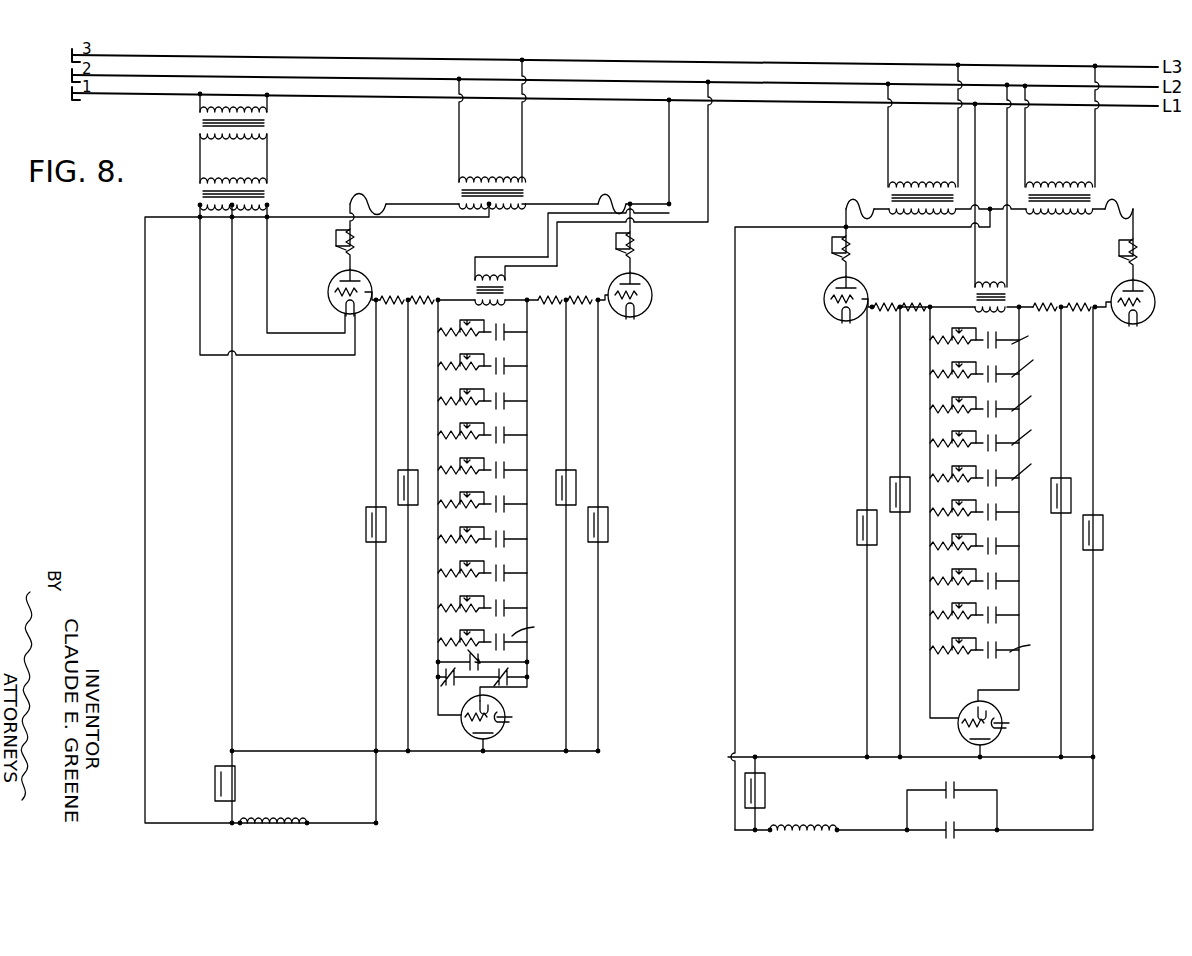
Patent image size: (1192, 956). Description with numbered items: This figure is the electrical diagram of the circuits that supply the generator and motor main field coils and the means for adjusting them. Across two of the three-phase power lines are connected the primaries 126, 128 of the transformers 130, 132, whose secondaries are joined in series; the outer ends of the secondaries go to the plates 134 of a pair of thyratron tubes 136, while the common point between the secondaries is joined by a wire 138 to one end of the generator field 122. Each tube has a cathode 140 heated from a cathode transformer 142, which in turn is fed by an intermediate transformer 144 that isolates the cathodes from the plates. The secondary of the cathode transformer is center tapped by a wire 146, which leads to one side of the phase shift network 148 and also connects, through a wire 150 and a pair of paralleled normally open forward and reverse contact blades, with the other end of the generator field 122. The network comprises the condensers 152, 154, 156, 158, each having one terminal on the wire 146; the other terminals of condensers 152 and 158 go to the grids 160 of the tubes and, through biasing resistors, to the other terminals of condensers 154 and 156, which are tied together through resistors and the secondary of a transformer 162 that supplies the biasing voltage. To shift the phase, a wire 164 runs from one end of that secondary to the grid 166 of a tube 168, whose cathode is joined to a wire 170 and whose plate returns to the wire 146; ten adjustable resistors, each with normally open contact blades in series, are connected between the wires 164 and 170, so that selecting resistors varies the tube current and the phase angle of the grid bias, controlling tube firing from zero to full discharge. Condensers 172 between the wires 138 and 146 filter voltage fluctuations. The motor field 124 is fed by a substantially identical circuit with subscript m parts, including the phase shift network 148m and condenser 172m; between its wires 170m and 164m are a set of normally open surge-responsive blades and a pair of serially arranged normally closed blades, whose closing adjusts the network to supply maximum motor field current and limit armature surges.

The generator field 122 is at (808, 830).
The motor field 124 is at (290, 822).
The primary of transformer 130 126 is at (932, 188).
The primary of transformer 132 128 is at (1070, 180).
The transformer 130 is at (884, 205).
The transformer 132 is at (1097, 208).
The plate 134 is at (836, 287).
The thyratron tube 136 is at (830, 300).
The wire 138 is at (736, 530).
The cathode 140 is at (840, 320).
The cathode transformer 142 is at (205, 198).
The intermediate transformer 144 is at (204, 121).
The wire 146 is at (233, 563).
The phase shift network 148 is at (1040, 512).
The phase shift network 148m is at (546, 525).
The wire 150 is at (1093, 791).
The condenser 152 is at (858, 536).
The condenser 154 is at (891, 478).
The condenser 156 is at (1072, 480).
The condenser 158 is at (1104, 517).
The grid 160 is at (870, 305).
The transformer 162 is at (1010, 290).
The wire 164 is at (929, 689).
The wire 164m is at (441, 716).
The grid 166 is at (960, 729).
The tube 168 is at (999, 712).
The wire 170 is at (1023, 627).
The wire 170m is at (520, 600).
The condenser 172 is at (768, 785).
The condenser 172m is at (236, 783).